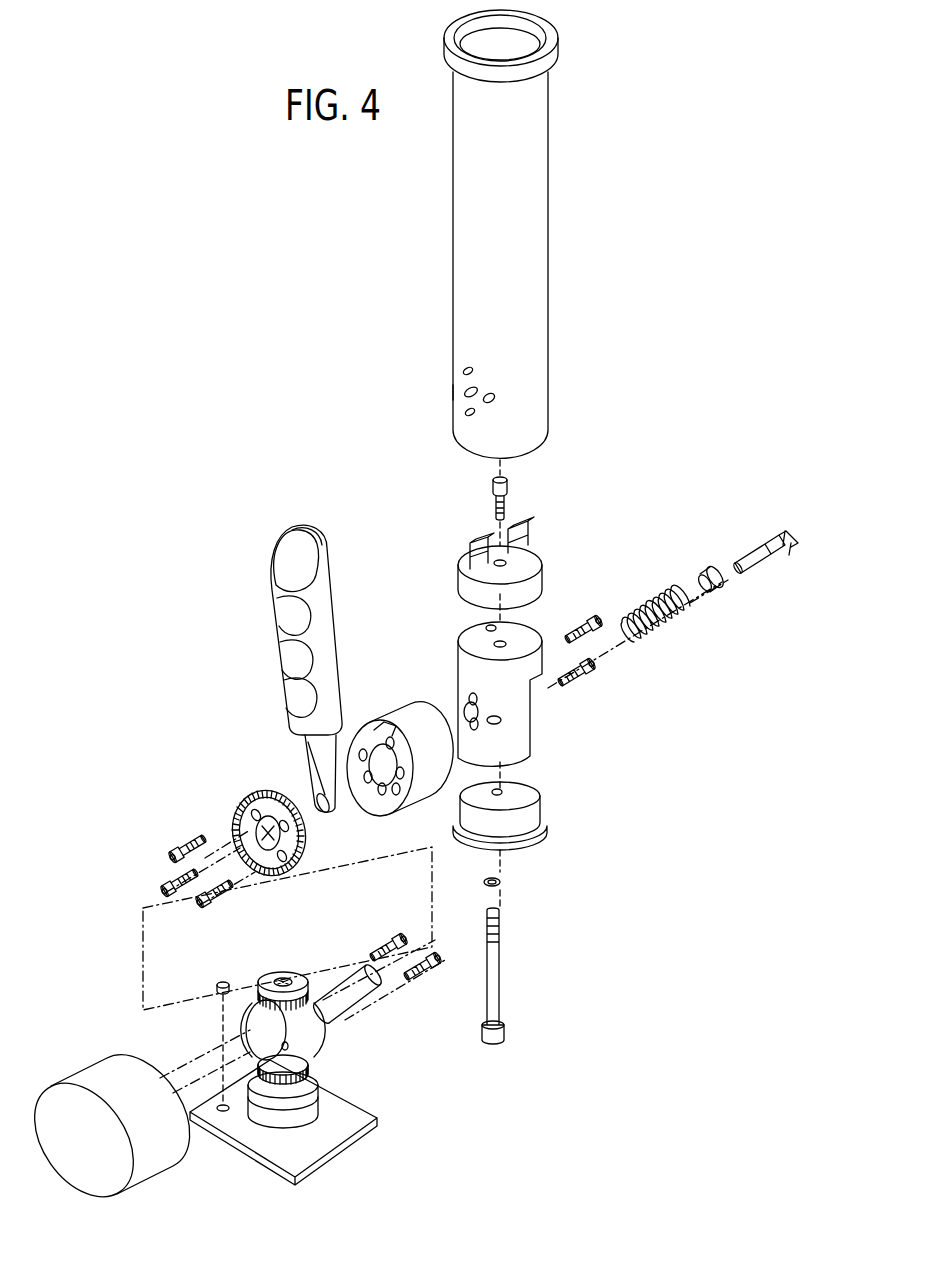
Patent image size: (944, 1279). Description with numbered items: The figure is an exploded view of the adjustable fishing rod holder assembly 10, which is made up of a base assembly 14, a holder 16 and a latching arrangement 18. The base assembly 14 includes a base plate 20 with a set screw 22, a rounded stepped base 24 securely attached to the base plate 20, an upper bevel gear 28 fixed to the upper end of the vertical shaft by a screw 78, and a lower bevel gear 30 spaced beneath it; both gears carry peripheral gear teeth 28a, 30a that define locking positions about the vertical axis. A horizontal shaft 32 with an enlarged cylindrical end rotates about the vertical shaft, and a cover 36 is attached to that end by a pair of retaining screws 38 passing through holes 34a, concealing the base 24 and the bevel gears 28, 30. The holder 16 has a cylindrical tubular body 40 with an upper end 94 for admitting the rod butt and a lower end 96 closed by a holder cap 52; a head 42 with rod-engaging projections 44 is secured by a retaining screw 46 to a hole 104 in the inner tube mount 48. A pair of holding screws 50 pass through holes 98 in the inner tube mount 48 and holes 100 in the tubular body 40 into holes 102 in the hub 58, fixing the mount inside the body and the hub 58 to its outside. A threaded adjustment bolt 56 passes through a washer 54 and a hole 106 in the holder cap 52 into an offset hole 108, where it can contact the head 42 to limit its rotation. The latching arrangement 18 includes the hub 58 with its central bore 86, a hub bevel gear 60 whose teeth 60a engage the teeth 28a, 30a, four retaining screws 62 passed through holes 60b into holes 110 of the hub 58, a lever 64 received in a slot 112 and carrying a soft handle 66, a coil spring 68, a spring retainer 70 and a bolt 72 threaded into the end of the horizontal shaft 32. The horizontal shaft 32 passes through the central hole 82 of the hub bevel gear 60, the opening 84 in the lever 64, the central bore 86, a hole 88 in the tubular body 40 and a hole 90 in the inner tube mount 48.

The fishing rod holder assembly 10 is at (692, 472).
The base assembly 14 is at (250, 1057).
The holder 16 is at (516, 710).
The latching arrangement 18 is at (280, 715).
The base plate 20 is at (283, 1132).
The set screw 22 is at (218, 992).
The rounded stepped base 24 is at (275, 1122).
The upper bevel gear 28 is at (290, 982).
The gear teeth 28a is at (290, 1048).
The lower bevel gear 30 is at (340, 1119).
The gear teeth 30a is at (322, 1080).
The horizontal shaft 32 is at (350, 992).
The holes 34a is at (262, 1057).
The cover 36 is at (96, 1078).
The retaining screws 38 is at (396, 936).
The cylindrical tubular body 40 is at (500, 249).
The head 42 is at (497, 569).
The rod-engaging projections 44 is at (478, 556).
The retaining screw 46 is at (506, 504).
The inner tube mount 48 is at (492, 690).
The holding screws 50 is at (603, 616).
The holder cap 52 is at (536, 821).
The washer 54 is at (498, 882).
The threaded adjustment bolt 56 is at (496, 988).
The hub 58 is at (401, 723).
The hub bevel gear 60 is at (249, 842).
The teeth 60a is at (255, 808).
The holes 60b is at (248, 818).
The retaining screws 62 is at (175, 850).
The lever 64 is at (306, 742).
The handle 66 is at (320, 572).
The coil spring 68 is at (665, 622).
The spring retainer 70 is at (712, 592).
The bolt 72 is at (770, 545).
The screw 78 is at (332, 1037).
The central hole 82 is at (320, 800).
The opening 84 is at (313, 799).
The central bore 86 is at (383, 746).
The hole 88 is at (465, 394).
The hole 90 is at (478, 716).
The upper end 94 is at (536, 44).
The lower end 96 is at (472, 452).
The holes 98 is at (478, 700).
The holes 100 is at (462, 372).
The holes 102 is at (437, 780).
The hole 104 is at (503, 642).
The hole 106 is at (503, 795).
The offset hole 108 is at (489, 631).
The holes 110 is at (380, 795).
The slot 112 is at (393, 738).